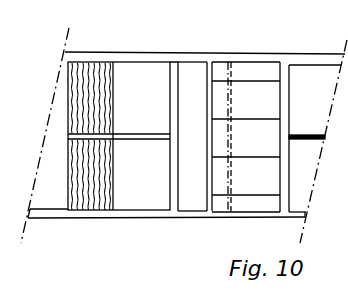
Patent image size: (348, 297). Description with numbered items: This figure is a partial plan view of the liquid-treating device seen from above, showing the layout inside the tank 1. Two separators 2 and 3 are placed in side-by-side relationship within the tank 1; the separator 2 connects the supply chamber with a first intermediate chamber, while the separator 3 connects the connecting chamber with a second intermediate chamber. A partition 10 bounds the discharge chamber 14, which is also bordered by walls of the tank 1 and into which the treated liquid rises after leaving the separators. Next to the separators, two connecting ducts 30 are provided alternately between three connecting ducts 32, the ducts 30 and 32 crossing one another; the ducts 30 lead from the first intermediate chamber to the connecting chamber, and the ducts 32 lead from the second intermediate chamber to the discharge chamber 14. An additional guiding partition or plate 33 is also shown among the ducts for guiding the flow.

The tank 1 is at (129, 51).
The separator 2 is at (132, 108).
The separator 3 is at (302, 121).
The partition 10 is at (178, 86).
The discharge chamber 14 is at (185, 153).
The connecting duct 30 is at (245, 107).
The connecting duct 32 is at (245, 151).
The guiding plate 33 is at (246, 203).